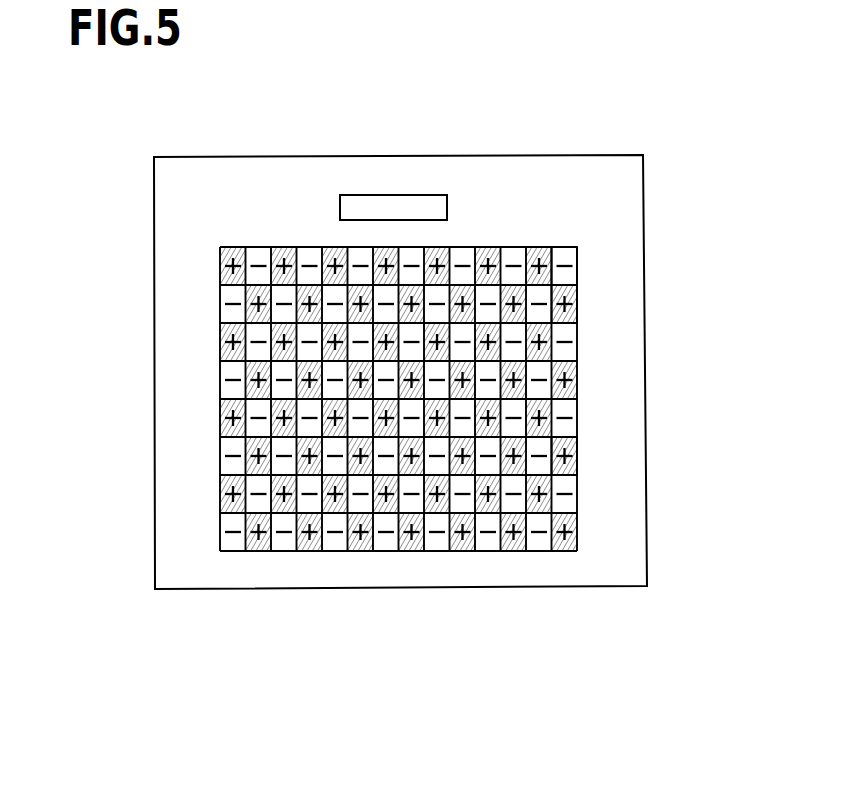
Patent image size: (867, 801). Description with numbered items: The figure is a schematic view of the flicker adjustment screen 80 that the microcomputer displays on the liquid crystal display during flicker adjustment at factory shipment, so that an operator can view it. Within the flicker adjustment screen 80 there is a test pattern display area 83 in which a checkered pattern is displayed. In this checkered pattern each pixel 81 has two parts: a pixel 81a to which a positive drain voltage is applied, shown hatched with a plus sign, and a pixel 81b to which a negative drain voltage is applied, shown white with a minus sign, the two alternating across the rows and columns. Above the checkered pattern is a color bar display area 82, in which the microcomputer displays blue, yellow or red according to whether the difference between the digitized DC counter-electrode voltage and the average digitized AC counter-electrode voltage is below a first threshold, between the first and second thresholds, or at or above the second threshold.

The flicker adjustment screen 80 is at (416, 112).
The pixel 81 is at (733, 255).
The pixel (positive part) 81a is at (563, 287).
The pixel (negative part) 81b is at (563, 255).
The color bar display area 82 is at (420, 205).
The test pattern display area 83 is at (590, 444).